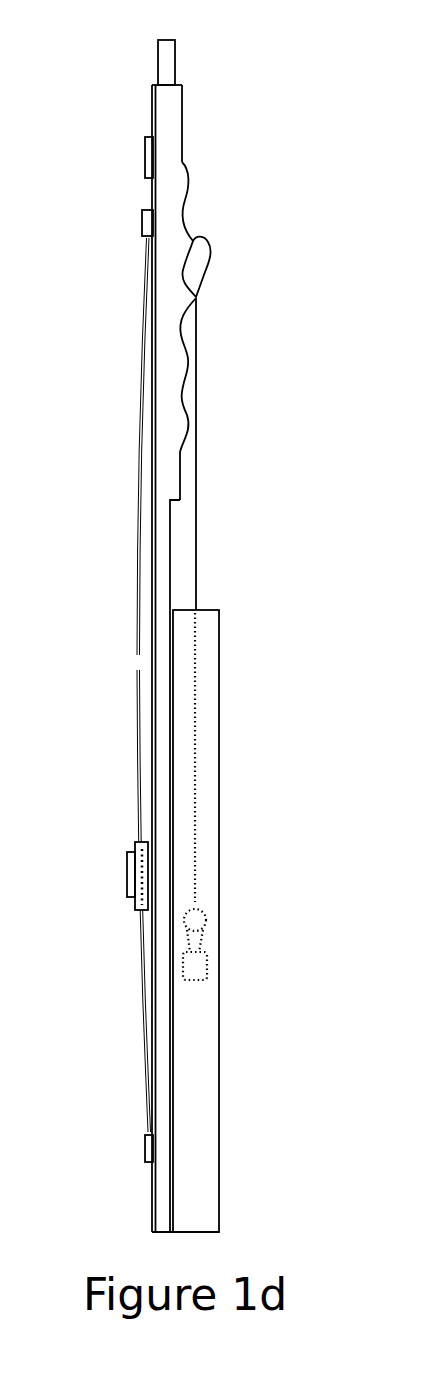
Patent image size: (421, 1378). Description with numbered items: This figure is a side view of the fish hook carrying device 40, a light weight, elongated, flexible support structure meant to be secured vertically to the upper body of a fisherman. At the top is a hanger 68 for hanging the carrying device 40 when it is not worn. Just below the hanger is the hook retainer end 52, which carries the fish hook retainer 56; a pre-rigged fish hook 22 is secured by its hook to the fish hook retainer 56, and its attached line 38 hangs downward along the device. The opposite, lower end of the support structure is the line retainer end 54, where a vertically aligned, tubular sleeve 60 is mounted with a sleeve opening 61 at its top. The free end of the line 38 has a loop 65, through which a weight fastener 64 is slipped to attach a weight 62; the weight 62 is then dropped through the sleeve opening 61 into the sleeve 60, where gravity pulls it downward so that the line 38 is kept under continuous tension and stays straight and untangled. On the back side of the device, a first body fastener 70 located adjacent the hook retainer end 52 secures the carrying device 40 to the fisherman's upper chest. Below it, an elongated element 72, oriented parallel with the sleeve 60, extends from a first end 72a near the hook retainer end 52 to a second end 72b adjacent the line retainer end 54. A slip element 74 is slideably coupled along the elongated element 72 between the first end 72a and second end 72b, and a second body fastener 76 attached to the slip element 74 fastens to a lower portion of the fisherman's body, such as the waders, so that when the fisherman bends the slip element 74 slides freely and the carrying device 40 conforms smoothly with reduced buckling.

The fish hook carrying device 40 is at (223, 66).
The hanger 68 is at (168, 47).
The hook retainer end 52 is at (180, 82).
The fish hook retainer 56 is at (172, 187).
The pre-rigged fish hook 22 is at (212, 258).
The line 38 is at (195, 547).
The sleeve 60 is at (207, 718).
The sleeve opening 61 is at (205, 610).
The loop 65 is at (203, 915).
The weight fastener 64 is at (196, 940).
The weight 62 is at (195, 970).
The line retainer end 54 is at (187, 1233).
The first body fastener 70 is at (150, 160).
The first end 72a is at (145, 243).
The elongated element 72 is at (142, 432).
The second end 72b is at (145, 1127).
The slip element 74 is at (141, 842).
The second body fastener 76 is at (131, 868).